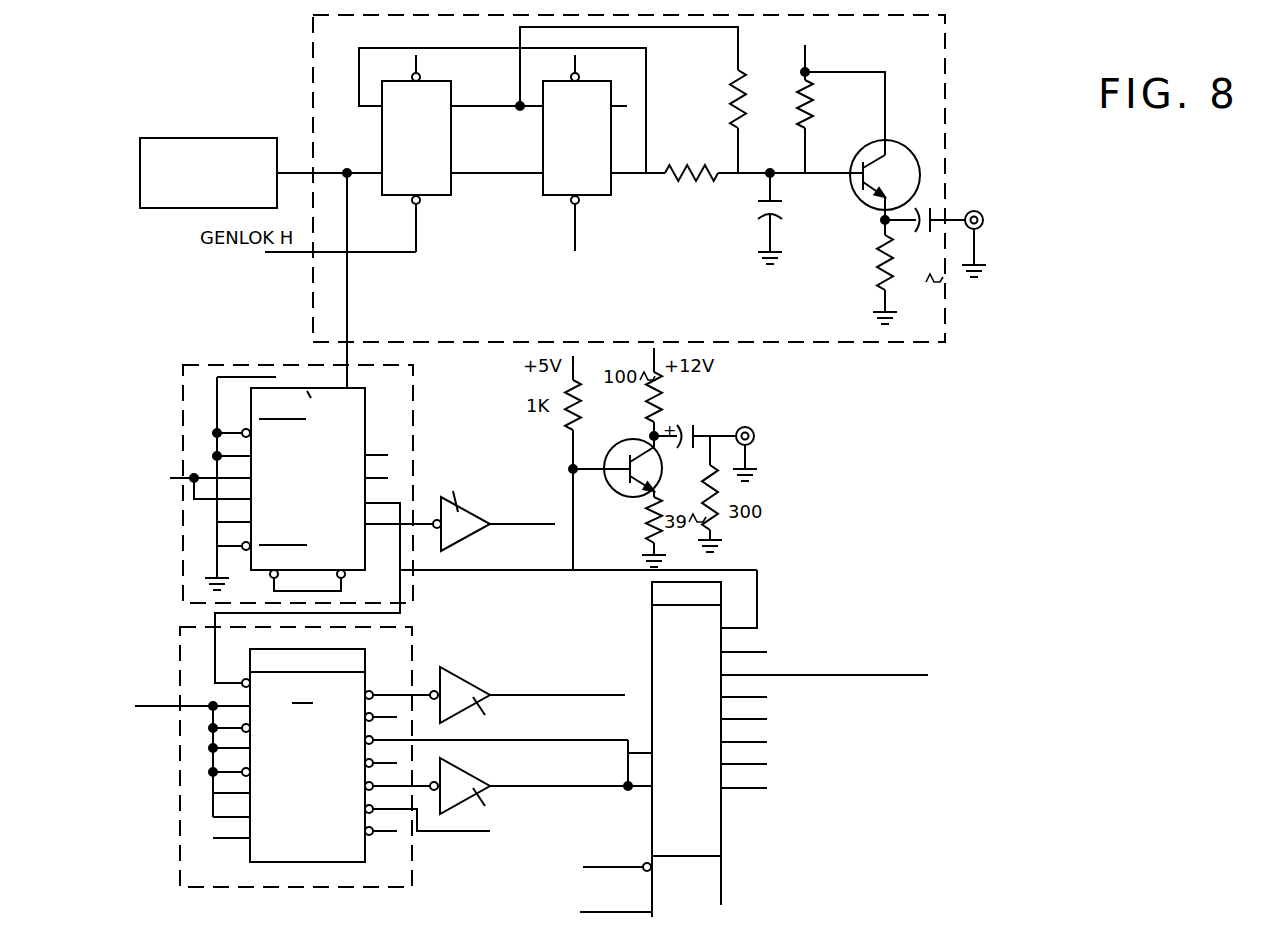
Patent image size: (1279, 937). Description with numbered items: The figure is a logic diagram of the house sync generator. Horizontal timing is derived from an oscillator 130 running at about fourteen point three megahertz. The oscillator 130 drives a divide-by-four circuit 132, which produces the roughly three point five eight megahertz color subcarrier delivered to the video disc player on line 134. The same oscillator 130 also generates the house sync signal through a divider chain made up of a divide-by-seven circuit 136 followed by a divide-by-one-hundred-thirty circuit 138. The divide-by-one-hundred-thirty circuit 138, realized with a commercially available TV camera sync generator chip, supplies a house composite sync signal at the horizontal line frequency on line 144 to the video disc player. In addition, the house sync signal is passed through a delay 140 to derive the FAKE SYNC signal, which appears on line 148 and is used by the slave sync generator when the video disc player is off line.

The oscillator 130 is at (182, 138).
The divide-by-four circuit 132 is at (948, 118).
The line 134 is at (958, 218).
The divide-by-7 circuit 136 is at (415, 432).
The divide-by-130 circuit 138 is at (415, 666).
The delay 140 is at (650, 622).
The line 144 is at (723, 432).
The line 148 is at (778, 677).